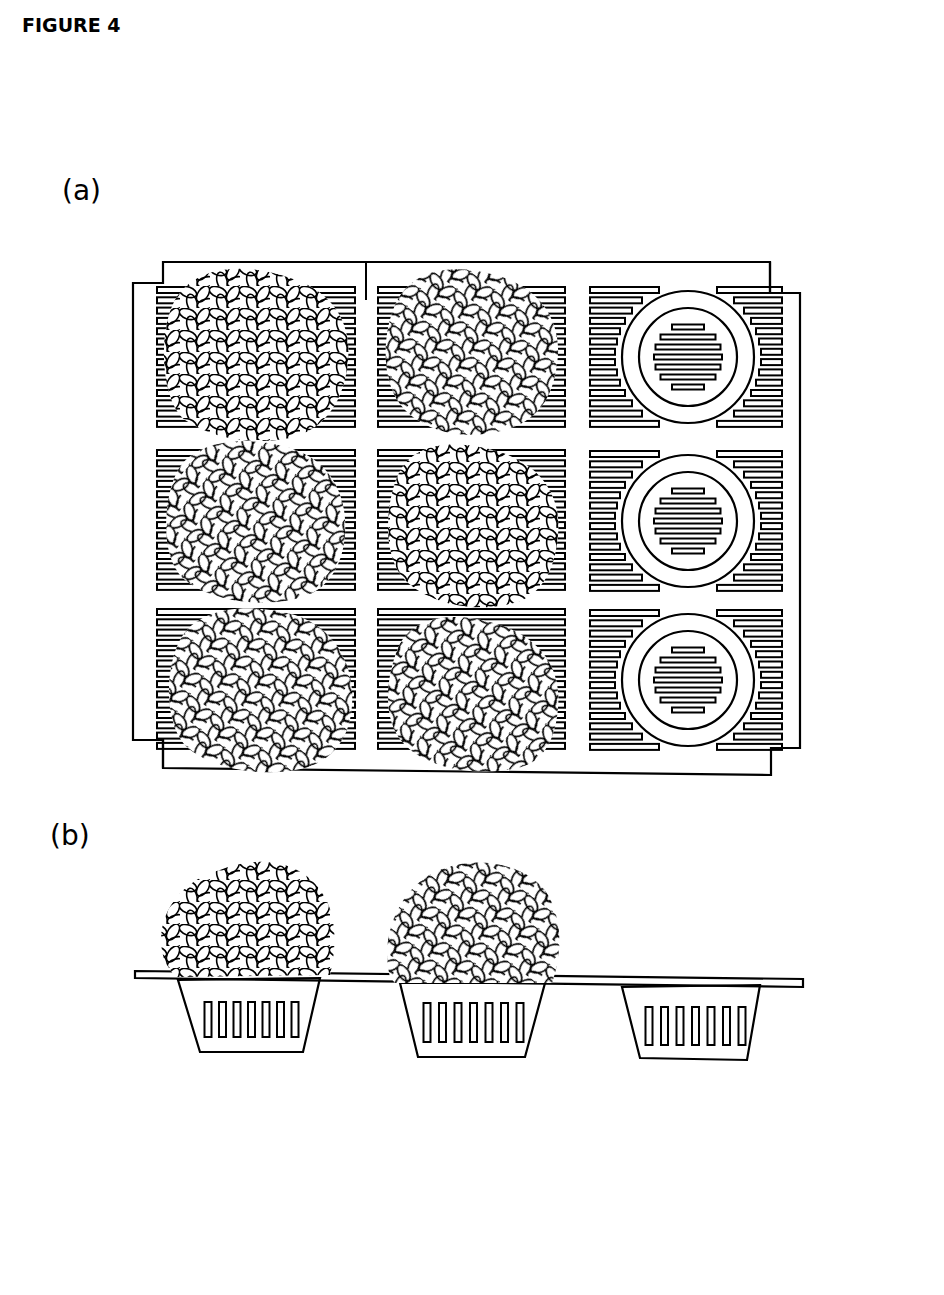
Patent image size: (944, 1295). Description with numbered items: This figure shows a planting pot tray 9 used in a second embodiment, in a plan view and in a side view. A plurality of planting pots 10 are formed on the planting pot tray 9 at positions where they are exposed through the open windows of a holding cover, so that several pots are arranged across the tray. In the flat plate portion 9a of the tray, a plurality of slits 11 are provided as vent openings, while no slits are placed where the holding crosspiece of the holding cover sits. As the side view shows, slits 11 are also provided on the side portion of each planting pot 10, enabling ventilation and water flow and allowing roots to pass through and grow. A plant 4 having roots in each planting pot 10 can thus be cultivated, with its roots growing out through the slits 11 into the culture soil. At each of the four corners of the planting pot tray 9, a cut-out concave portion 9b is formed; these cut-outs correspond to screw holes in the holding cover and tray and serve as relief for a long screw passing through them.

The plant 4 is at (255, 272).
The planting pot tray 9 is at (444, 260).
The flat plate portion 9a is at (366, 262).
The cut-out concave portion 9b is at (772, 276).
The planting pot 10 is at (651, 325).
The slit 11 is at (548, 300).